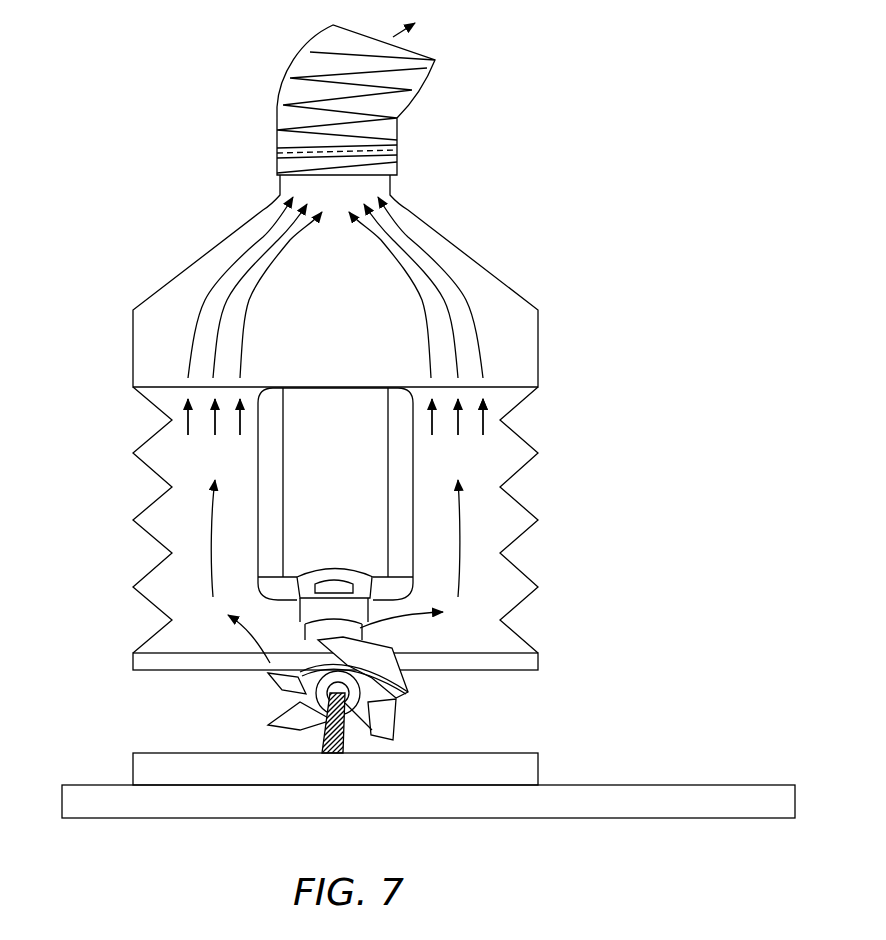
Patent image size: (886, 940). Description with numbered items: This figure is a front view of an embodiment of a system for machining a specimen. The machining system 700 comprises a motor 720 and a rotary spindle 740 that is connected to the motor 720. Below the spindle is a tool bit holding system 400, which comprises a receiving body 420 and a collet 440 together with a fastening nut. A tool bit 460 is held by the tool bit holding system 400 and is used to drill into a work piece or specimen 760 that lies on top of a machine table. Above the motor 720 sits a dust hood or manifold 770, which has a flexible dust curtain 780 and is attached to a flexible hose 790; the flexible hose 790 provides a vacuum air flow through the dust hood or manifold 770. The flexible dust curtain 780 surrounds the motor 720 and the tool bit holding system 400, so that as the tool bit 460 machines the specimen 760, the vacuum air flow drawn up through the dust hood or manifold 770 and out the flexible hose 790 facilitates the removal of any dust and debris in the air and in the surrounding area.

The flexible hose 790 is at (273, 91).
The dust hood or manifold 770 is at (463, 259).
The machining system 700 is at (556, 456).
The motor 720 is at (380, 505).
The rotary spindle 740 is at (350, 588).
The receiving body 420 is at (360, 625).
The tool bit holding system 400 is at (326, 665).
The collet 440 is at (368, 693).
The tool bit 460 is at (347, 744).
The flexible dust curtain 780 is at (152, 620).
The work piece/specimen 760 is at (133, 772).